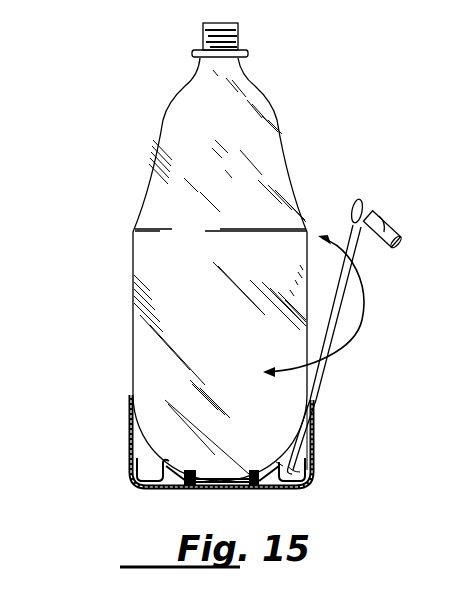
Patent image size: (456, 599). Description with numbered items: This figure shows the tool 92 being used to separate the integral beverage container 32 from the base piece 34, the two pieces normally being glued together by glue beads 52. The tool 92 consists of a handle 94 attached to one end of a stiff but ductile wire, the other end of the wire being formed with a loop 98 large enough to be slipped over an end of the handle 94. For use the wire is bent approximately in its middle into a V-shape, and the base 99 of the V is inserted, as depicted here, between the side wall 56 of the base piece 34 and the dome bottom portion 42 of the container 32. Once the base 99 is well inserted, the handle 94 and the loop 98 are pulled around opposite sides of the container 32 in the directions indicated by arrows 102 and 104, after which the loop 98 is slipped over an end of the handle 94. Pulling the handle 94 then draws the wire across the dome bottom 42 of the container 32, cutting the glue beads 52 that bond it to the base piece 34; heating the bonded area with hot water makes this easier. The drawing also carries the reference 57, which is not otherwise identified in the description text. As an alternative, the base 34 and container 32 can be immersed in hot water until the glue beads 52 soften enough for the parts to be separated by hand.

The container 32 is at (128, 297).
The base piece 34 is at (126, 458).
The dome bottom portion 42 is at (283, 463).
The glue beads 52 is at (185, 489).
The side wall 56 is at (313, 437).
The base rim 57 is at (448, 447).
The tool 92 is at (380, 264).
The handle 94 is at (392, 232).
The loop 98 is at (358, 200).
The base of the V 99 is at (300, 471).
The arrow 102 is at (263, 366).
The arrow 104 is at (322, 233).